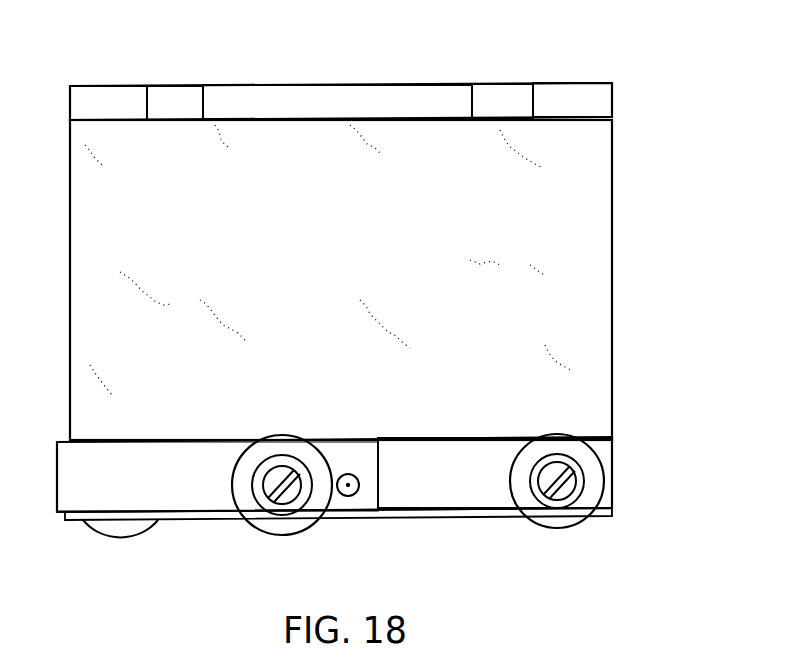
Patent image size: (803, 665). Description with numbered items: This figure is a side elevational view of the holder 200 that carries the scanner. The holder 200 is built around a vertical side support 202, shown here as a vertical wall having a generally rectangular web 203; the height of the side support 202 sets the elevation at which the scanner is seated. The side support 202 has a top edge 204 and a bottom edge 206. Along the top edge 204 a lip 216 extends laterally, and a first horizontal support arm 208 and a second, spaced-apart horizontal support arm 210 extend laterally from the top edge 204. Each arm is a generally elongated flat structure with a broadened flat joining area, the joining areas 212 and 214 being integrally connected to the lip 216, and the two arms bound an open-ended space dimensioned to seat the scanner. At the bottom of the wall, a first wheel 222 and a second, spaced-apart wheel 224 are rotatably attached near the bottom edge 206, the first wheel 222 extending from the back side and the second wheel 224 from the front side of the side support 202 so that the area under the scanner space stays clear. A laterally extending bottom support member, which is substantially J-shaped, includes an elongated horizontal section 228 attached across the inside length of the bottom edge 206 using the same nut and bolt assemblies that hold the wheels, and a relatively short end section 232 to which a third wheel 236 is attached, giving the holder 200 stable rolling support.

The holder 200 is at (349, 64).
The vertical side support 202 is at (583, 243).
The web 203 is at (370, 261).
The top edge 204 is at (440, 45).
The bottom edge 206 is at (383, 518).
The first horizontal support arm 208 is at (175, 105).
The second horizontal support arm 210 is at (500, 95).
The joining area 212 is at (128, 108).
The joining area 214 is at (622, 45).
The lip 216 is at (272, 105).
The first wheel 222 is at (118, 538).
The second wheel 224 is at (570, 518).
The elongated horizontal section 228 is at (492, 465).
The end section 232 is at (207, 488).
The third wheel 236 is at (268, 535).